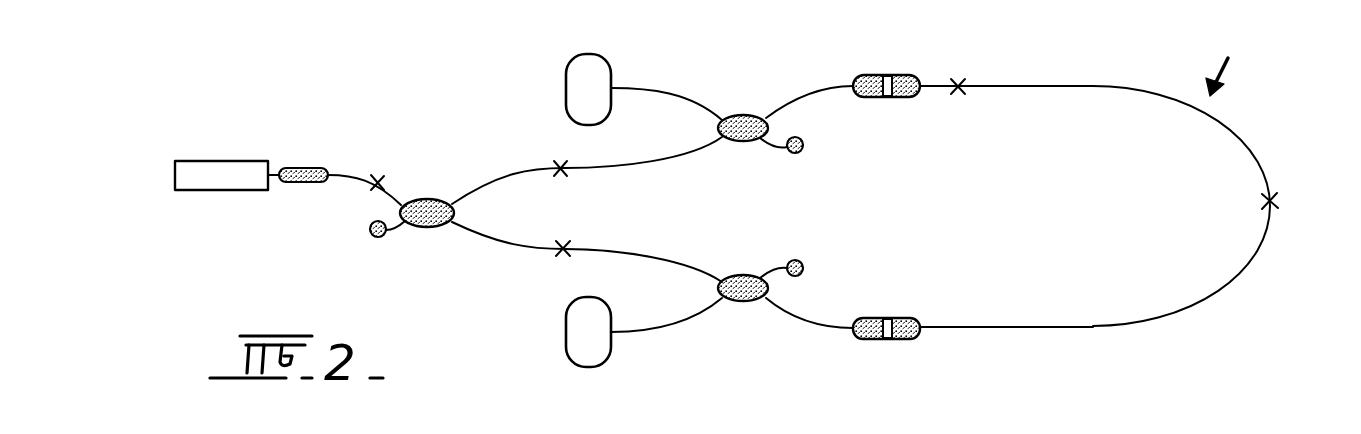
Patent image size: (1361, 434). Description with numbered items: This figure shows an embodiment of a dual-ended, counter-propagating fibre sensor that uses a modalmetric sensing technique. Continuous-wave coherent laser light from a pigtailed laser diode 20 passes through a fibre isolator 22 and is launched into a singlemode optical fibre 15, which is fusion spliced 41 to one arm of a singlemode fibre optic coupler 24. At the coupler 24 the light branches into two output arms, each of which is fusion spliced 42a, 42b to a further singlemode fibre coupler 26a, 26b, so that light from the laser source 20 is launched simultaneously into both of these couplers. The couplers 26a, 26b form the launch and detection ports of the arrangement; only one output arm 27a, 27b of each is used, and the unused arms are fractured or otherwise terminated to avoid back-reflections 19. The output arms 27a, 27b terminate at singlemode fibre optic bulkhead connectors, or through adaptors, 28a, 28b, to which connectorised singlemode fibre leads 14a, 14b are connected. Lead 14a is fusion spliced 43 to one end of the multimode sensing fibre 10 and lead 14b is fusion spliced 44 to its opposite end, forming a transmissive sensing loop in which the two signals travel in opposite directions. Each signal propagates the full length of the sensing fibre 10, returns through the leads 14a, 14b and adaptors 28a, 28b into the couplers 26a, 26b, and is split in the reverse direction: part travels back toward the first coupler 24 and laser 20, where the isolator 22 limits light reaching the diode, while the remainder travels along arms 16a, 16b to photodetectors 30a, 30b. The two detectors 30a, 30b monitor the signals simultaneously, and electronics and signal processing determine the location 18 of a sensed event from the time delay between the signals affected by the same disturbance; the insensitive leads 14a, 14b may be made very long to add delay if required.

The multimode sensing fibre 10 is at (1091, 85).
The connectorised singlemode fibre lead 14a is at (930, 84).
The connectorised singlemode fibre lead 14b is at (1033, 330).
The singlemode optical fibre 15 is at (350, 172).
The coupler arm 16a is at (684, 92).
The coupler arm 16b is at (697, 320).
The location of the sensed event 18 is at (1228, 58).
The terminated coupler arm 19 is at (370, 237).
The pigtailed laser diode 20 is at (227, 175).
The fibre isolator 22 is at (305, 168).
The singlemode fibre optic coupler 24 is at (428, 199).
The singlemode fibre coupler 26a is at (745, 142).
The singlemode fibre coupler 26b is at (746, 274).
The output arm 27a is at (811, 92).
The output arm 27b is at (808, 327).
The singlemode fibre optic bulkhead connector 28a is at (871, 75).
The singlemode fibre optic bulkhead connector 28b is at (882, 340).
The photodetector 30a is at (610, 30).
The photodetector 30b is at (603, 350).
The fusion splice 41 is at (378, 172).
The fusion splice 42a is at (568, 172).
The fusion splice 42b is at (568, 242).
The fusion splice 43 is at (960, 74).
The fusion splice 44 is at (1284, 200).